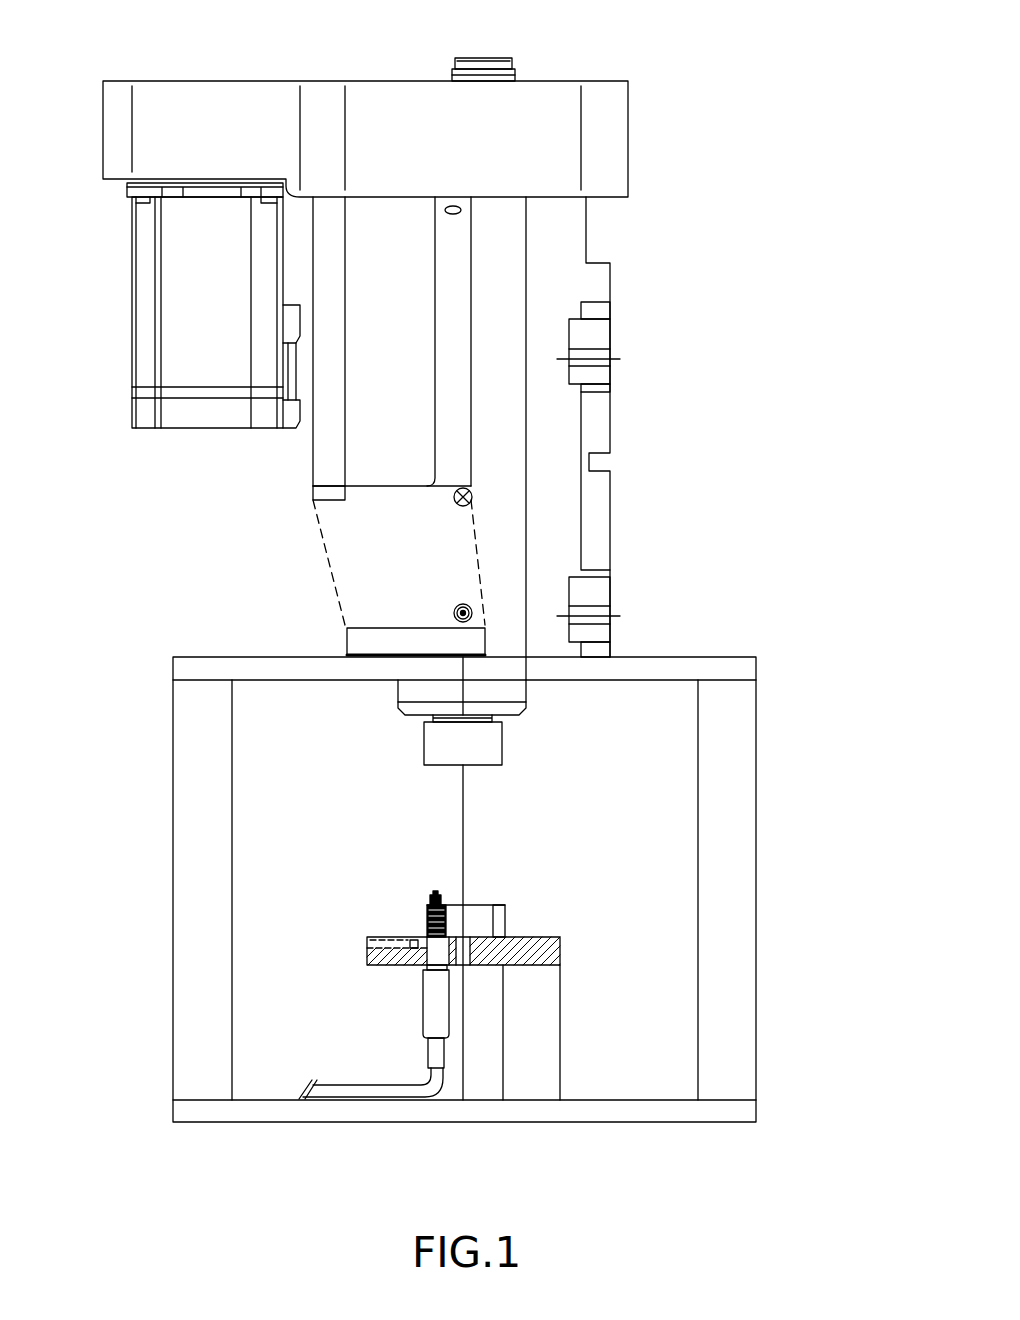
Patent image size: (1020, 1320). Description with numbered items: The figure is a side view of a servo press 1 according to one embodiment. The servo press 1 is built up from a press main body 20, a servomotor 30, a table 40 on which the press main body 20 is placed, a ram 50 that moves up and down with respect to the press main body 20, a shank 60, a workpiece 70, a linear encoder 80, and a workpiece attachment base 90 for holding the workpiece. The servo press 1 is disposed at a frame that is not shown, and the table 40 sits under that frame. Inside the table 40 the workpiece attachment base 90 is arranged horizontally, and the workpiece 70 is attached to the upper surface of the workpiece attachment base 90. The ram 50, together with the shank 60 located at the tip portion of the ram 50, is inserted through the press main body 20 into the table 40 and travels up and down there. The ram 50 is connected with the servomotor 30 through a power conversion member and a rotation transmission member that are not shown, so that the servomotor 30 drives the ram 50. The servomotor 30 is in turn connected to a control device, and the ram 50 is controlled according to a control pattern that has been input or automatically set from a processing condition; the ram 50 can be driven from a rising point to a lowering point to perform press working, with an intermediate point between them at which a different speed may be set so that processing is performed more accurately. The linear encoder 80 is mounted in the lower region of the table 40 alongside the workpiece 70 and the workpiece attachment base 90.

The servo press 1 is at (745, 118).
The press main body 20 is at (610, 349).
The servomotor 30 is at (137, 308).
The table 40 is at (172, 660).
The ram 50 is at (397, 708).
The shank 60 is at (502, 762).
The workpiece 70 is at (505, 905).
The linear encoder 80 is at (425, 913).
The workpiece attachment base 90 is at (560, 1017).